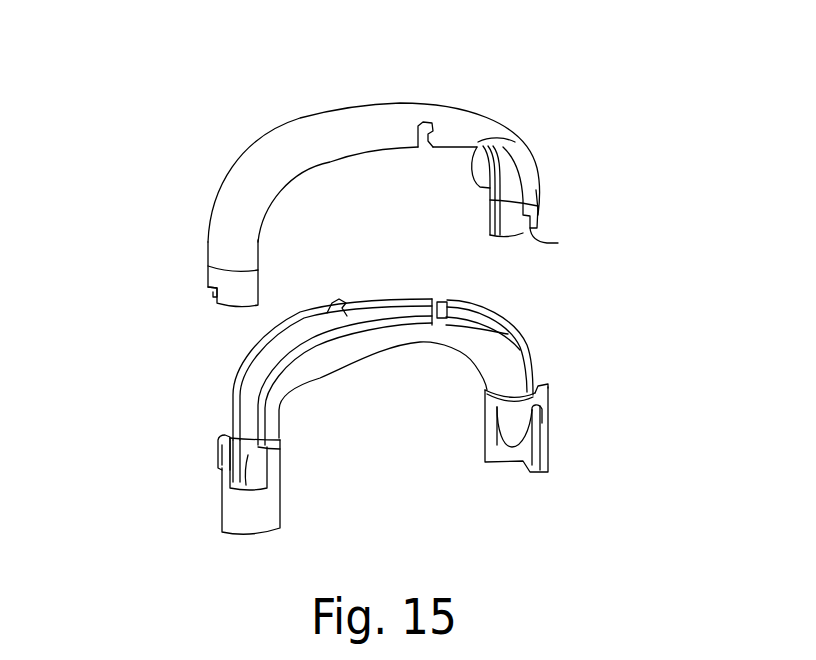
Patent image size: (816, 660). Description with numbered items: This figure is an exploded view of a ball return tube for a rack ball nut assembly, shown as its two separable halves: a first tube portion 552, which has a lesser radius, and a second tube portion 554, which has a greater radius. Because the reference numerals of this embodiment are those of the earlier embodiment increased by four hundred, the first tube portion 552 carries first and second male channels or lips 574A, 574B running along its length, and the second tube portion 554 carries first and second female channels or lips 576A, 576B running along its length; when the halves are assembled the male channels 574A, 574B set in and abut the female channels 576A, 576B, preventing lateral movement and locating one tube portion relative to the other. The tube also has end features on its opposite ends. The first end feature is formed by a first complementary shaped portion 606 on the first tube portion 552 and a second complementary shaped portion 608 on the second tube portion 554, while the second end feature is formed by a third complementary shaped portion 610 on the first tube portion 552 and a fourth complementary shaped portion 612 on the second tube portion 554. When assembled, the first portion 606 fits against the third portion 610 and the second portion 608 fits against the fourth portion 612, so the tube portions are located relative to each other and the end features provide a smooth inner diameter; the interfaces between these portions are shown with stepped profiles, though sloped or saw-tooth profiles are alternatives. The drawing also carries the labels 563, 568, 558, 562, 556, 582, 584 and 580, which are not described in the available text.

The upper ring segment assembly 563 is at (360, 190).
The second tube portion 554 is at (373, 122).
The tab 568 is at (426, 122).
The second female channel 576B is at (483, 133).
The first female channel 576A is at (541, 197).
The end feature fourth portion 612 is at (558, 243).
The end feature second portion 608 is at (208, 292).
The second male channel 574B is at (400, 300).
The first male channel 574A is at (415, 312).
The tab 558 is at (332, 301).
The slot 562 is at (442, 302).
The rail 556 is at (478, 304).
The first tube portion 552 is at (379, 399).
The end feature third portion 610 is at (543, 387).
The second leg 584 is at (566, 431).
The foot 580 is at (512, 468).
The end feature first portion 606 is at (217, 448).
The first leg 582 is at (195, 510).